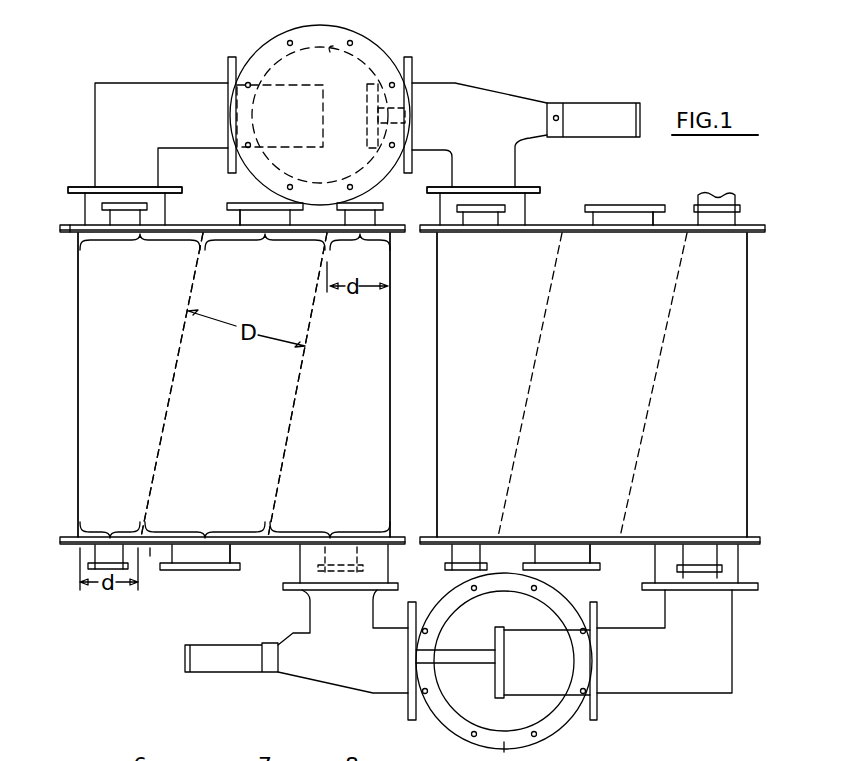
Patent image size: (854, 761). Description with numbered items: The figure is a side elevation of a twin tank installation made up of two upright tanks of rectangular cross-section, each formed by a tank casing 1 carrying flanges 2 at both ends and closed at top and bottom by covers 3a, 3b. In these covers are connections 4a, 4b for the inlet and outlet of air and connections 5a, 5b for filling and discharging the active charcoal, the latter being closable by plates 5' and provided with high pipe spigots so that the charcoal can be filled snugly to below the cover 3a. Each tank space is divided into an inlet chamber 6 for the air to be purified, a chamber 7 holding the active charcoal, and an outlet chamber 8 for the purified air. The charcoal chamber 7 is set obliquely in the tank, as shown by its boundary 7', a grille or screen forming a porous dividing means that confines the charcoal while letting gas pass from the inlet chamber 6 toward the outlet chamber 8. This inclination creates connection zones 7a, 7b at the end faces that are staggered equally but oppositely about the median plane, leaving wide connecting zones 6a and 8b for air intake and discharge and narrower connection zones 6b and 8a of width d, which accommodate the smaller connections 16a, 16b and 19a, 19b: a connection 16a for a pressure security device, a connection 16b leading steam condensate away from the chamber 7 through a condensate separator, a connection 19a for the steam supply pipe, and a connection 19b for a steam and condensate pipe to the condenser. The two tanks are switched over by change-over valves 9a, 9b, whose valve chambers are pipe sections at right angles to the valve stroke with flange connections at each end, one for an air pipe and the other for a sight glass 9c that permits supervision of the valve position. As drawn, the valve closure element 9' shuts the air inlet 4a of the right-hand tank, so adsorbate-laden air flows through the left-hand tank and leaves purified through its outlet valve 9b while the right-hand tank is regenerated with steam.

The tank casing 1 is at (78, 388).
The flanges 2 is at (68, 234).
The cover 3a is at (70, 225).
The cover 3b is at (150, 552).
The connection 4a is at (151, 216).
The connection 4b is at (375, 559).
The plates 5' is at (412, 395).
The connection 5a is at (240, 216).
The connection 5b is at (235, 559).
The inlet chamber 6 is at (78, 326).
The connecting zone 6a is at (123, 218).
The connection zone 6b is at (110, 518).
The chamber 7 is at (414, 385).
The boundary 7' is at (168, 385).
The connection zone 7a is at (265, 258).
The connection zone 7b is at (205, 518).
The outlet chamber 8 is at (378, 410).
The connection zone 8a is at (360, 258).
The connecting zone 8b is at (348, 478).
The valve closure element 9' is at (484, 661).
The change-over valve 9a is at (275, 45).
The change-over valve 9b is at (308, 670).
The sight glass 9c is at (358, 68).
The connection 16a is at (112, 215).
The connection 16b is at (320, 555).
The connection 19a is at (375, 217).
The connection 19b is at (95, 555).